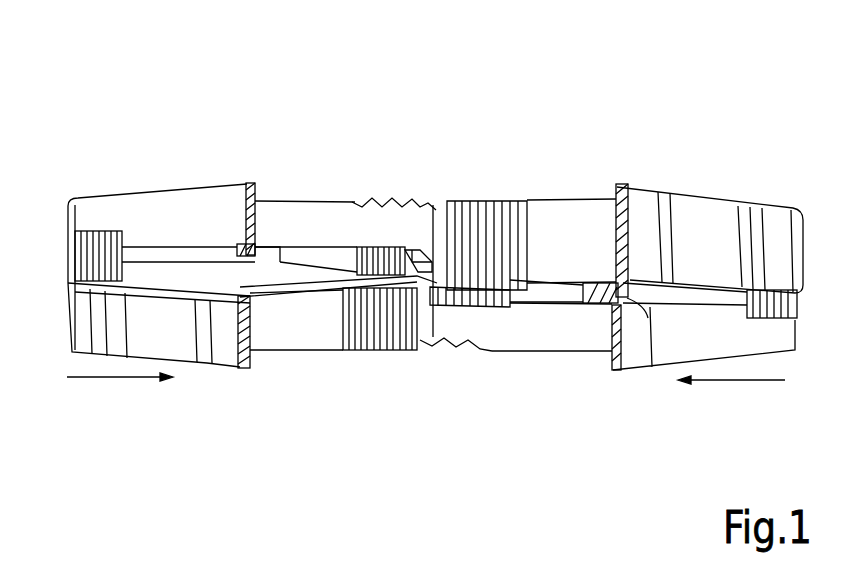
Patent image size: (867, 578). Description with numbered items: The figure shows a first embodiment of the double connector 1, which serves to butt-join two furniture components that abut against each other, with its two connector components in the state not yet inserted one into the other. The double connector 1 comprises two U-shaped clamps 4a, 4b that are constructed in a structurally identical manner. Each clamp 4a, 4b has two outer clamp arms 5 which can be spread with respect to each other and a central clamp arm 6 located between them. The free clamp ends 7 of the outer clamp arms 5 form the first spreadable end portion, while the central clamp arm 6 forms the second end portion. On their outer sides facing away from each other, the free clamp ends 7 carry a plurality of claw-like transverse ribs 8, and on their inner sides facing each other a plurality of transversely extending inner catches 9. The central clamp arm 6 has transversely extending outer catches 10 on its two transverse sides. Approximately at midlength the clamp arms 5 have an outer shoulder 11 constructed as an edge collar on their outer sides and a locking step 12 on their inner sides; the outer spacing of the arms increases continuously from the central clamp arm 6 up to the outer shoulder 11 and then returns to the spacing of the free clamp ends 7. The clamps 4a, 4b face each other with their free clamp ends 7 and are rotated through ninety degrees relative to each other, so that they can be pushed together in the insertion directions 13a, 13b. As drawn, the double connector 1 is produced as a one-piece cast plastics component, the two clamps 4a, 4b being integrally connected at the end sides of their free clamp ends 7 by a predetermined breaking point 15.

The double connector 1 is at (133, 82).
The U-shaped clamp 4a is at (763, 201).
The U-shaped clamp 4b is at (105, 197).
The outer clamp arm 5 is at (273, 196).
The central clamp arm 6 is at (75, 333).
The free clamp end 7 is at (356, 204).
The claw-like transverse rib 8 is at (408, 246).
The inner catch 9 is at (353, 215).
The outer catch 10 is at (63, 263).
The outer shoulder 11 is at (256, 183).
The locking step 12 is at (238, 252).
The insertion direction 13a is at (752, 385).
The insertion direction 13b is at (100, 380).
The predetermined breaking point 15 is at (433, 205).